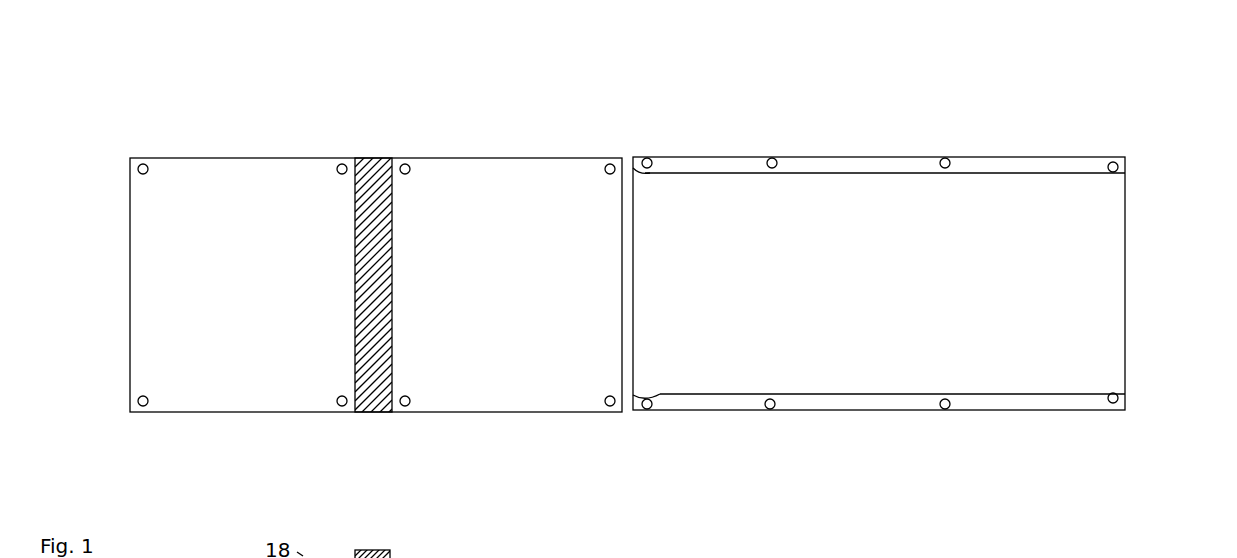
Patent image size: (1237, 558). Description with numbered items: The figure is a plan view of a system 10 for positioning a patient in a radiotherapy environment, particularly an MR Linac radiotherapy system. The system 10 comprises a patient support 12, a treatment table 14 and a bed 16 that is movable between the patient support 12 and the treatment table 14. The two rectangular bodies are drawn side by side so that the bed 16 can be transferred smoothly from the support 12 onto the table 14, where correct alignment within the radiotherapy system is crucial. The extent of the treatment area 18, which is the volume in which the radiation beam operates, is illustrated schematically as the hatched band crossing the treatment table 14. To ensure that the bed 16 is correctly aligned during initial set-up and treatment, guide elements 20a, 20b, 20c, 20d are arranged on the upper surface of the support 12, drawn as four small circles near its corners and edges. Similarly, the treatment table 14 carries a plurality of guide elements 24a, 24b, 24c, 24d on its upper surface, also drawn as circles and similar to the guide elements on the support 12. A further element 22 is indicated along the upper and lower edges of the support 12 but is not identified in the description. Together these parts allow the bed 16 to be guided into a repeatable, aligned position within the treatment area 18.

The system 10 is at (516, 128).
The patient support 12 is at (1040, 156).
The treatment table 14 is at (129, 272).
The bed 16 is at (1126, 282).
The treatment area 18 is at (369, 413).
The guide element 20a is at (1119, 167).
The guide element 20b is at (943, 158).
The guide element 20c is at (774, 159).
The guide element 20d is at (647, 158).
The flap seam 22 is at (660, 173).
The guide element 24a is at (606, 165).
The guide element 24b is at (405, 163).
The guide element 24c is at (343, 163).
The guide element 24d is at (143, 163).